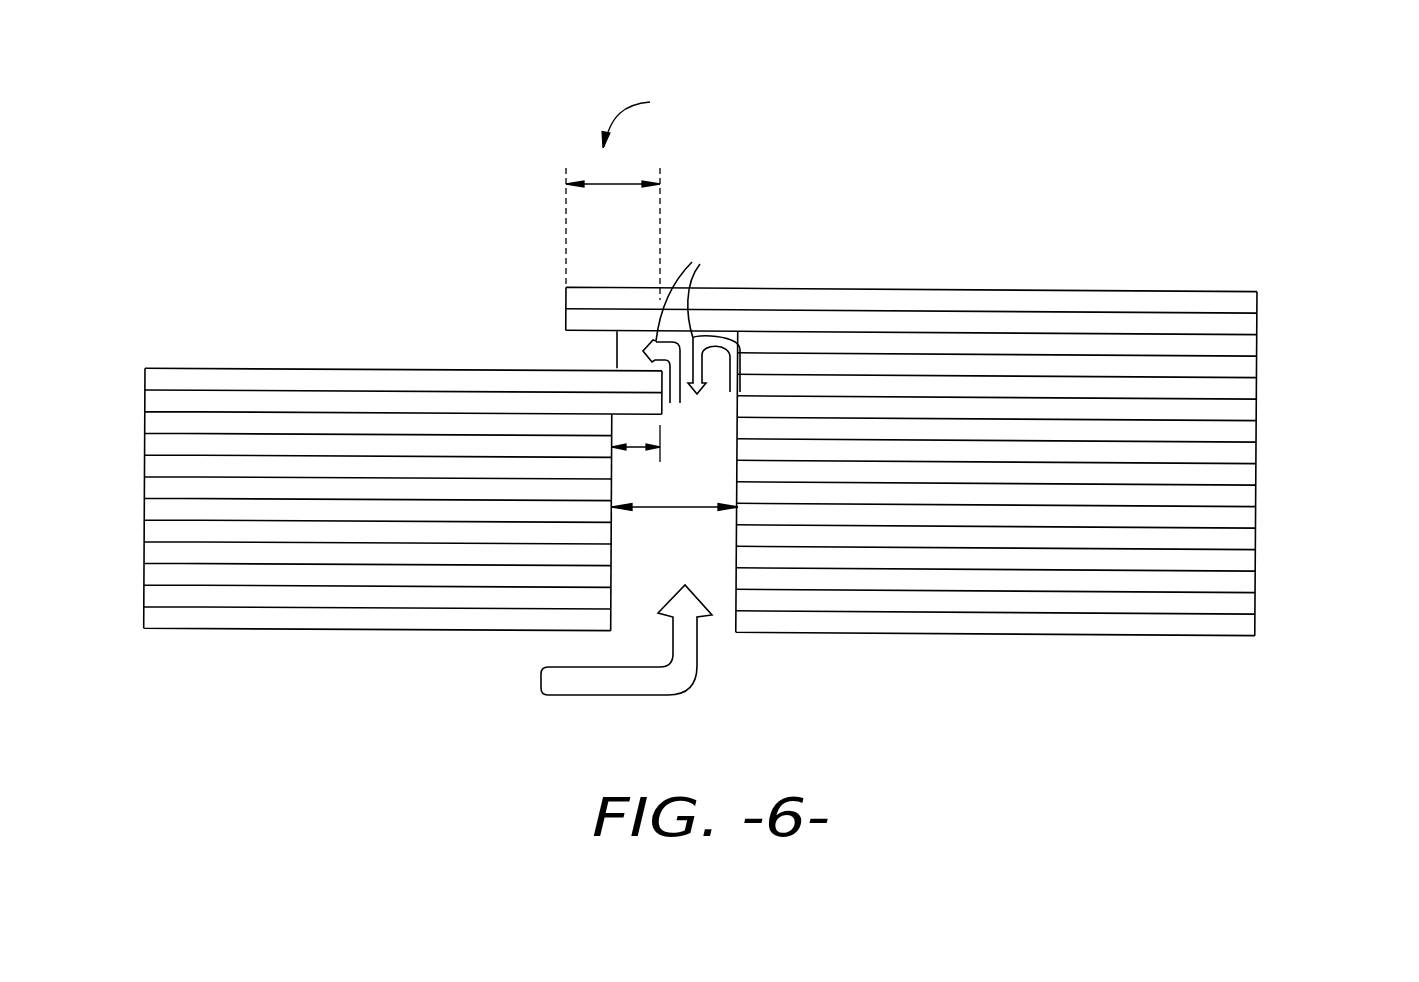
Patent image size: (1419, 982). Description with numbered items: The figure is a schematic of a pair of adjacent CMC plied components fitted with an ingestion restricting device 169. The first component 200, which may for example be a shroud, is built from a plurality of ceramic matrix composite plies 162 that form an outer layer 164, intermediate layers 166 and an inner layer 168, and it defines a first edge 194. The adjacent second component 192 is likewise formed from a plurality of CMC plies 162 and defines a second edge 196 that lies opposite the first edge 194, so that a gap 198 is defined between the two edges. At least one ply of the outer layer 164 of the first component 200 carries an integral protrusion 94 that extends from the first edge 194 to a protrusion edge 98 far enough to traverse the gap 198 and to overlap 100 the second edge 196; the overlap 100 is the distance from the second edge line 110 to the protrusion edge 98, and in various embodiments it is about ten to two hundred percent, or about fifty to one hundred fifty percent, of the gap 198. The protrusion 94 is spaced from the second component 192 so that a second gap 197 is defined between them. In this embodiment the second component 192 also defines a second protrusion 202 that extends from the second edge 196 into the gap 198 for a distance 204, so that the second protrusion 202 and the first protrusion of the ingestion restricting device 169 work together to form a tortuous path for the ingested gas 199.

The protrusion 94 is at (603, 300).
The protrusion edge 98 is at (566, 294).
The overlap 100 is at (619, 182).
The second edge line 110 is at (663, 226).
The ceramic matrix composite plies 162 is at (122, 368).
The outer layer 164 is at (1270, 290).
The intermediate layers 166 is at (1270, 337).
The inner layer 168 is at (1270, 590).
The ingestion restricting device 169 is at (650, 117).
The second component 192 is at (362, 352).
The first edge 194 is at (738, 567).
The second edge 196 is at (615, 533).
The second gap 197 is at (617, 345).
The gap 198 is at (665, 510).
The ingested gas 199 is at (557, 722).
The first component 200 is at (943, 267).
The second protrusion 202 is at (460, 368).
The distance 204 is at (635, 450).